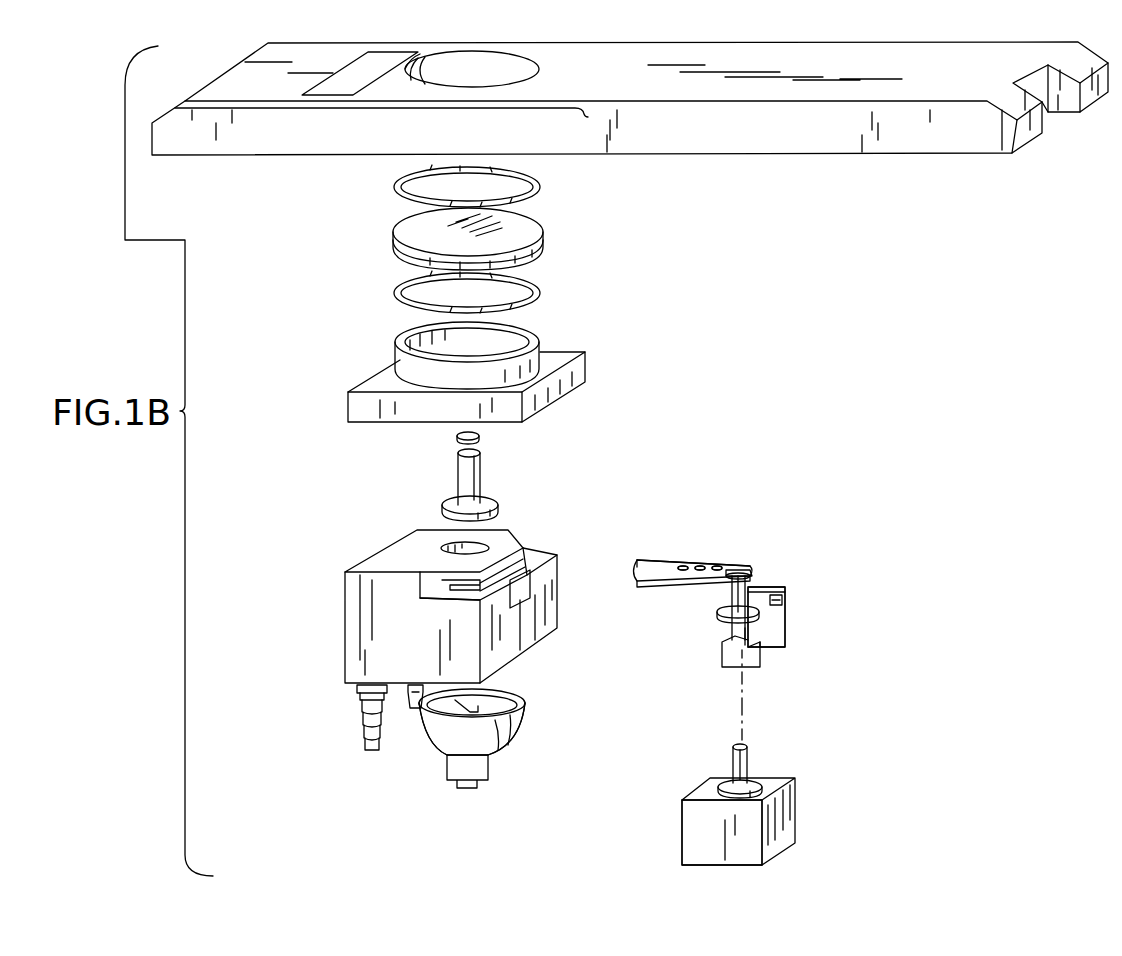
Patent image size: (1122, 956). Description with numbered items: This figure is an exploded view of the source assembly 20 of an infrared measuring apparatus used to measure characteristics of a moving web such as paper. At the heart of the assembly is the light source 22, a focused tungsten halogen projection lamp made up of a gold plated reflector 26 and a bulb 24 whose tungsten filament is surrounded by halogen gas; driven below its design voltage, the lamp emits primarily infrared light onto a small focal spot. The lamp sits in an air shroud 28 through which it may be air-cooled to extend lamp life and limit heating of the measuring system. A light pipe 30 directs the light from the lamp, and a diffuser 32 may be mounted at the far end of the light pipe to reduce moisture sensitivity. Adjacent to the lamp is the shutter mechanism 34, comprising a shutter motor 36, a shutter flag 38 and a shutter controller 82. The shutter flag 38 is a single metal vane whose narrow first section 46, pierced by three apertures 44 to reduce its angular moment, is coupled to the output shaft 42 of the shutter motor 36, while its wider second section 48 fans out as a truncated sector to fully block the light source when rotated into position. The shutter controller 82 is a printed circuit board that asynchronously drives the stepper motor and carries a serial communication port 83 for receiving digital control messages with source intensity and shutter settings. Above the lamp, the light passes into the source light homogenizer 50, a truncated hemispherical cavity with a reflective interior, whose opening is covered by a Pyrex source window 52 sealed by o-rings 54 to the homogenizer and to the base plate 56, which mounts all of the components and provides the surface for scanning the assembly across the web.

The source assembly 20 is at (900, 329).
The light source 22 is at (540, 695).
The bulb 24 is at (463, 702).
The reflector 26 is at (497, 692).
The air shroud 28 is at (343, 635).
The light pipe 30 is at (485, 480).
The diffuser 32 is at (483, 437).
The shutter mechanism 34 is at (838, 555).
The shutter motor 36 is at (682, 823).
The shutter flag 38 is at (752, 550).
The output shaft 42 is at (747, 587).
The aperture 44 is at (716, 572).
The first section 46 is at (738, 565).
The second section 48 is at (650, 585).
The source light homogenizer 50 is at (513, 337).
The source window 52 is at (545, 240).
The o-rings 54 is at (395, 190).
The base plate 56 is at (800, 155).
The shutter controller 82 is at (773, 627).
The serial communication port 83 is at (797, 587).